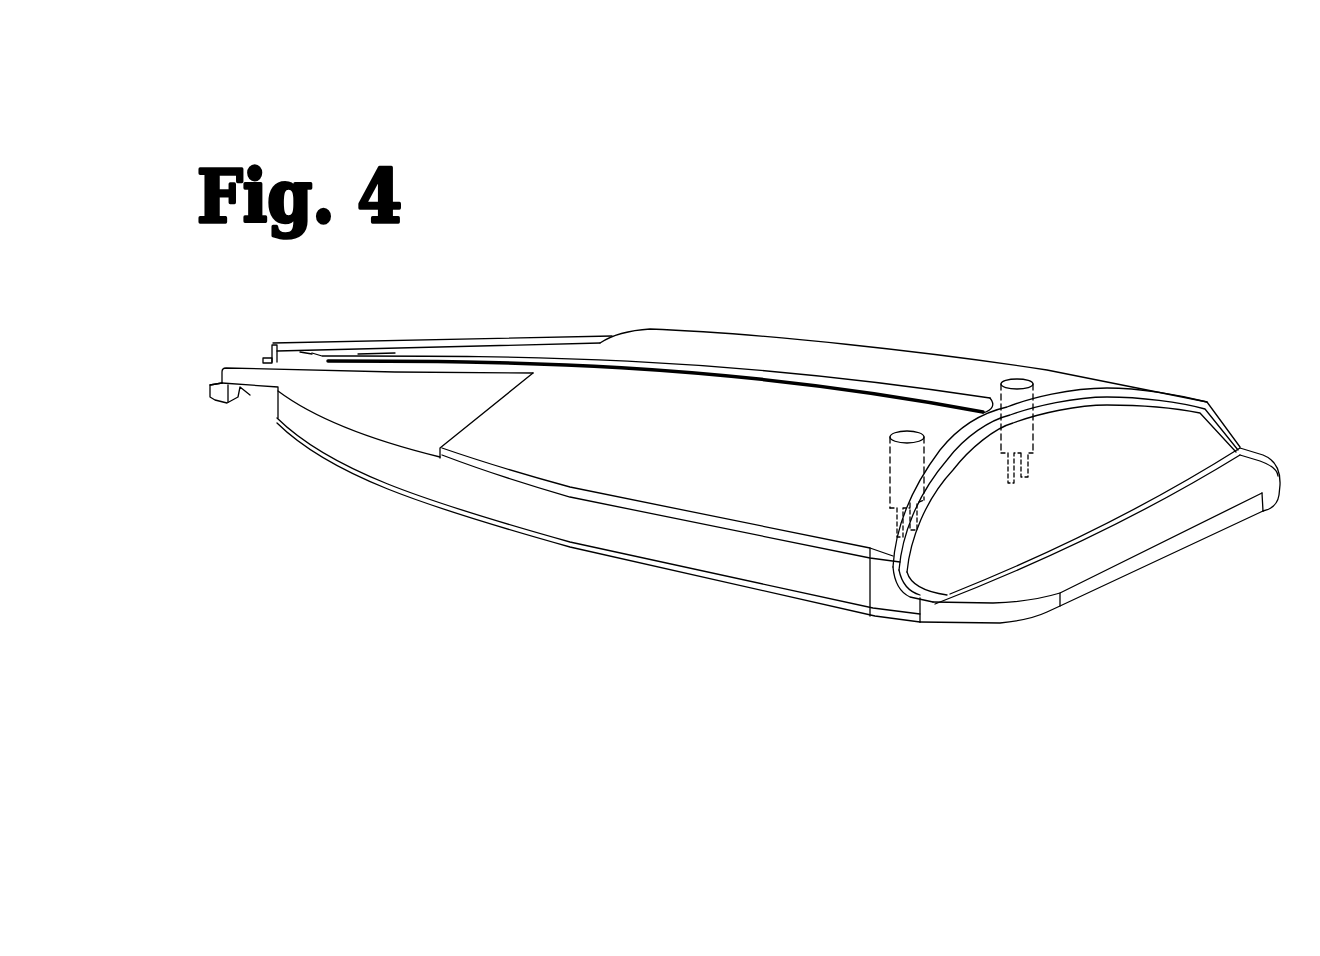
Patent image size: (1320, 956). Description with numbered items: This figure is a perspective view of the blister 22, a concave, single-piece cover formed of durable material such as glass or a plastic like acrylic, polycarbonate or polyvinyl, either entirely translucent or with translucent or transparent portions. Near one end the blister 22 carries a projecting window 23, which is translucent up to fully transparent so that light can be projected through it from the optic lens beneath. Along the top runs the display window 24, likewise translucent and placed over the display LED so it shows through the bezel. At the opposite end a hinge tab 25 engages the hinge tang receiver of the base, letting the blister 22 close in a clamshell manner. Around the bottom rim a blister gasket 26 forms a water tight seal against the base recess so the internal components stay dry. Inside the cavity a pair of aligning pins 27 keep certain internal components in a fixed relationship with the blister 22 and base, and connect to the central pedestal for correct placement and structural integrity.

The blister 22 is at (470, 608).
The projecting window 23 is at (1138, 443).
The display window 24 is at (697, 363).
The hinge tab 25 is at (230, 395).
The blister gasket 26 is at (655, 567).
The aligning pins 27 is at (1020, 400).